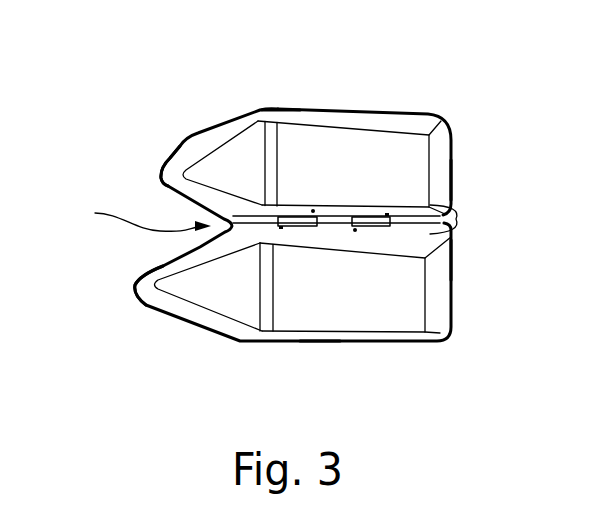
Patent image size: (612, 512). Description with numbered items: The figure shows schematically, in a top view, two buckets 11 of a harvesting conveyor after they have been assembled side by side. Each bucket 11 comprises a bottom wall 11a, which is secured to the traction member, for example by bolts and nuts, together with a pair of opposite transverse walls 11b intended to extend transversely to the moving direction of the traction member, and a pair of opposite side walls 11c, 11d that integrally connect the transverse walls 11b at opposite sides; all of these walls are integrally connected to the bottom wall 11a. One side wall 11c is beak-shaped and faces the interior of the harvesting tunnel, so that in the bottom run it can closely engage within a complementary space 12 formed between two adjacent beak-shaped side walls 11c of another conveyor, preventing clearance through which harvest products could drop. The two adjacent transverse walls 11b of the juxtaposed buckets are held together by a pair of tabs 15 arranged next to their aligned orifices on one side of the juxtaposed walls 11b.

The bucket 11 is at (370, 153).
The bottom wall 11a is at (329, 226).
The transverse wall 11b is at (322, 112).
The beak-shaped side wall 11c is at (177, 154).
The side wall 11d is at (452, 175).
The complementary space 12 is at (137, 219).
The tab 15 is at (302, 215).